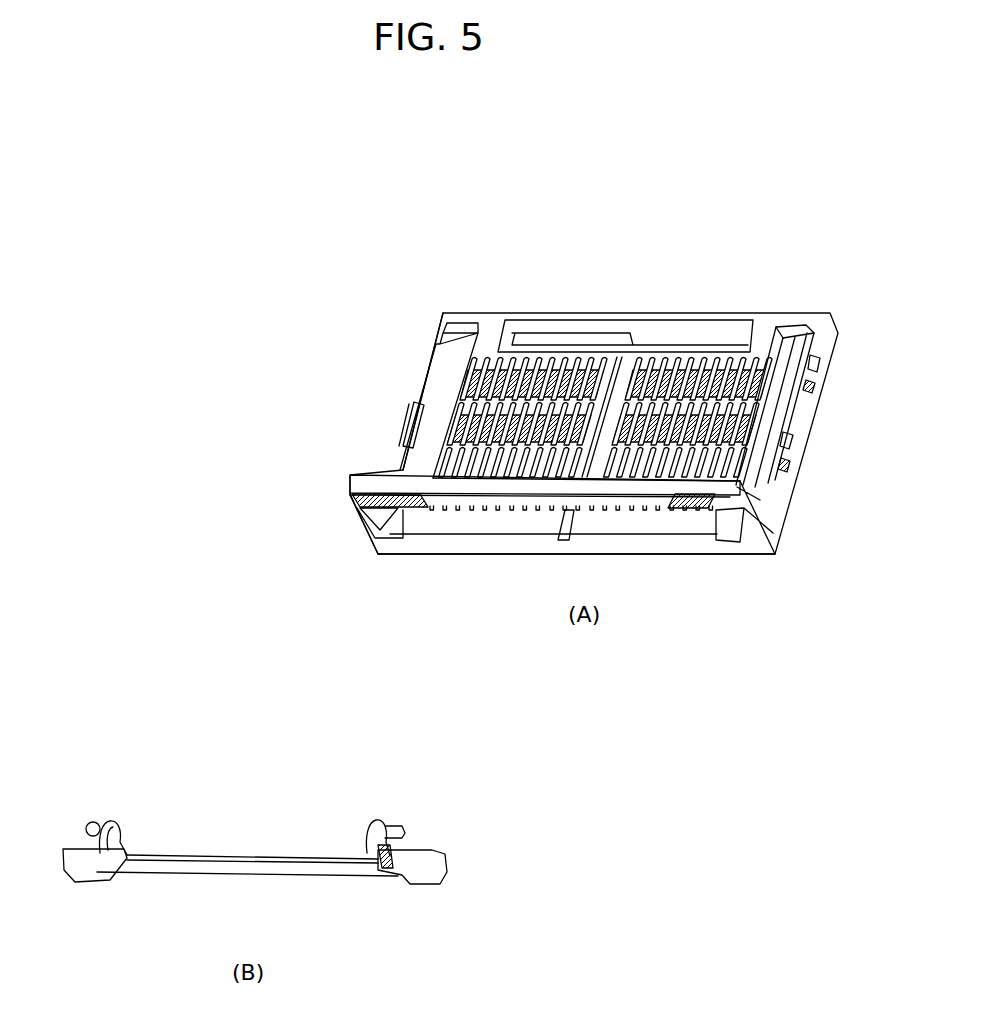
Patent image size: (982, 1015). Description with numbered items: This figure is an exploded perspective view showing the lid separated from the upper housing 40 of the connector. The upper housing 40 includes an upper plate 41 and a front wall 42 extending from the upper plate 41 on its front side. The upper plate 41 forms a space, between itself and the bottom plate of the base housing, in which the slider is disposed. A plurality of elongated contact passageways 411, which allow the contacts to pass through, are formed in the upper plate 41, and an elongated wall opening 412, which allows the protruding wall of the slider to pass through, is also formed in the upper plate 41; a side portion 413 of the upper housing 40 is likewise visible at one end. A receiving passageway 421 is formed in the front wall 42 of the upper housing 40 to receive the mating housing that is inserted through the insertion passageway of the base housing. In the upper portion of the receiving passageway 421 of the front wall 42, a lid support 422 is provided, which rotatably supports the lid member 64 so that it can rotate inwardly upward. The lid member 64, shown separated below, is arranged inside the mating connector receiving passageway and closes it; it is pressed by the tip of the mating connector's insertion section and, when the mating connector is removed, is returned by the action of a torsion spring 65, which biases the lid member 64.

The upper housing 40 is at (782, 244).
The upper plate 41 is at (496, 322).
The contact passageways 411 is at (701, 362).
The wall opening 412 is at (587, 320).
The side wall 413 is at (812, 321).
The front wall 42 is at (358, 508).
The receiving passageway 421 is at (432, 518).
The lid support 422 is at (356, 495).
The lid member 64 is at (222, 866).
The torsion spring 65 is at (378, 832).